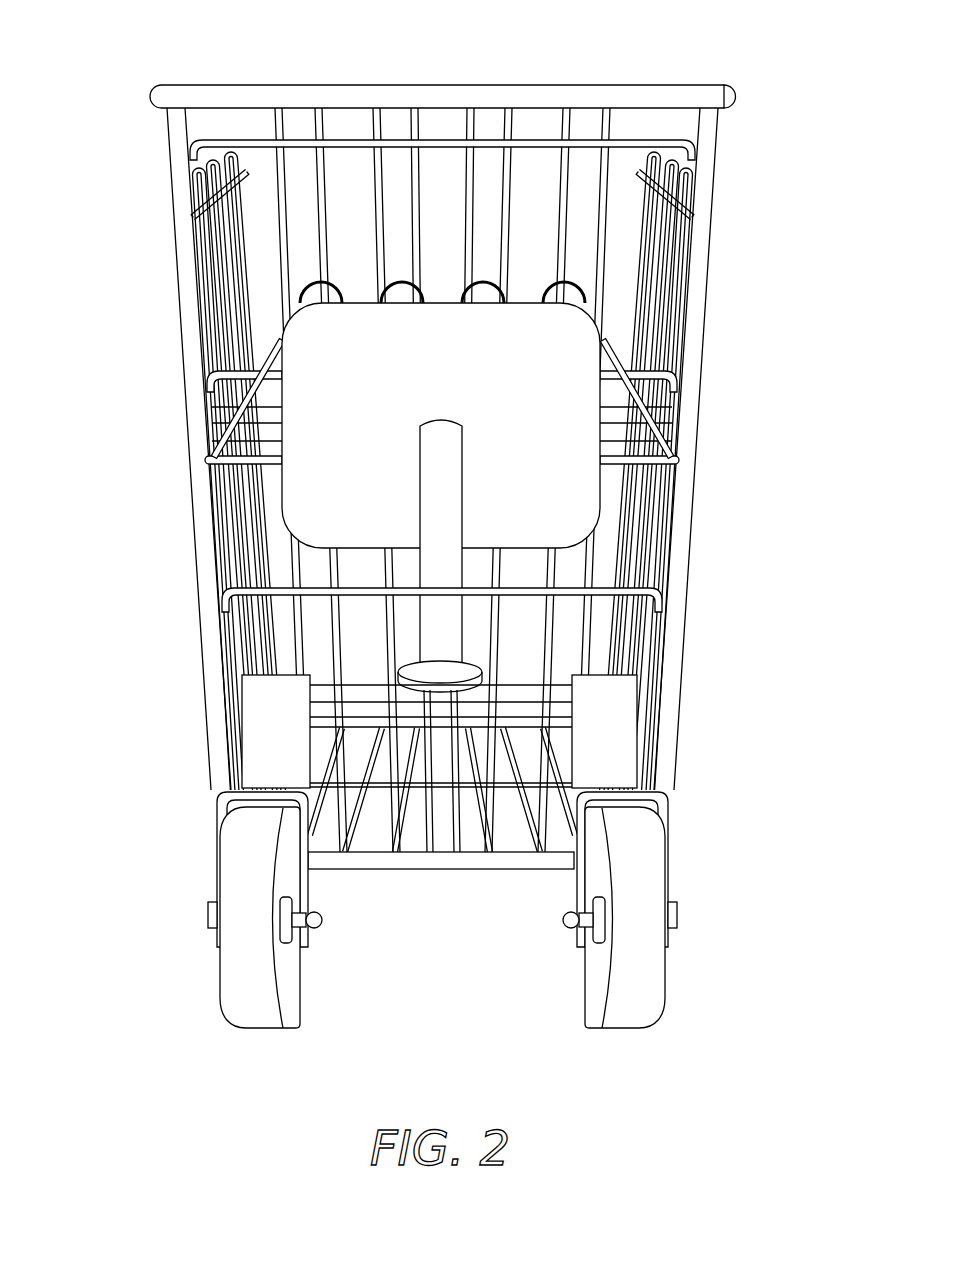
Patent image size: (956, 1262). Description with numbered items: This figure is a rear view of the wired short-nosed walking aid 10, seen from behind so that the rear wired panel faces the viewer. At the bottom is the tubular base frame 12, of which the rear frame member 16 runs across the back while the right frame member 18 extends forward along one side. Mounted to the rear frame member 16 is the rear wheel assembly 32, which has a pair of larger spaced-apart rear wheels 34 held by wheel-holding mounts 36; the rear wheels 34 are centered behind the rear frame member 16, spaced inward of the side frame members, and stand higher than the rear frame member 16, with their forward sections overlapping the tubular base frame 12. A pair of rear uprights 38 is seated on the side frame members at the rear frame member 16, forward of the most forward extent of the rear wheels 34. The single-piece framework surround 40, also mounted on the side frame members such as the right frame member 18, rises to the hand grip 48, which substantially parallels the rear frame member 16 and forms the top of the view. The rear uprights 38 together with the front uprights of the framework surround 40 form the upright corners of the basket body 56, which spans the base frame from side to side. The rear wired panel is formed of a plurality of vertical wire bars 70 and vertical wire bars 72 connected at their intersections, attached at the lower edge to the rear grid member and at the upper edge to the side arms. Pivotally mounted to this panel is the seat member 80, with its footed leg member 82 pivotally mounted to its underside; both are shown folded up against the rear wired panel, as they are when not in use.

The wired short-nosed walking aid 10 is at (748, 352).
The tubular base frame 12 is at (672, 738).
The rear frame member 16 is at (402, 869).
The right frame member 18 is at (682, 848).
The rear wheel assembly 32 is at (680, 888).
The rear wheels 34 is at (230, 1002).
The wheel-holding mounts 36 is at (235, 795).
The rear uprights 38 is at (178, 268).
The framework surround 40 is at (683, 85).
The hand grip 48 is at (288, 90).
The basket body 56 is at (625, 230).
The vertical wire bars 70 is at (580, 118).
The vertical wire bars 72 is at (484, 136).
The seat member 80 is at (524, 396).
The leg member 82 is at (455, 515).